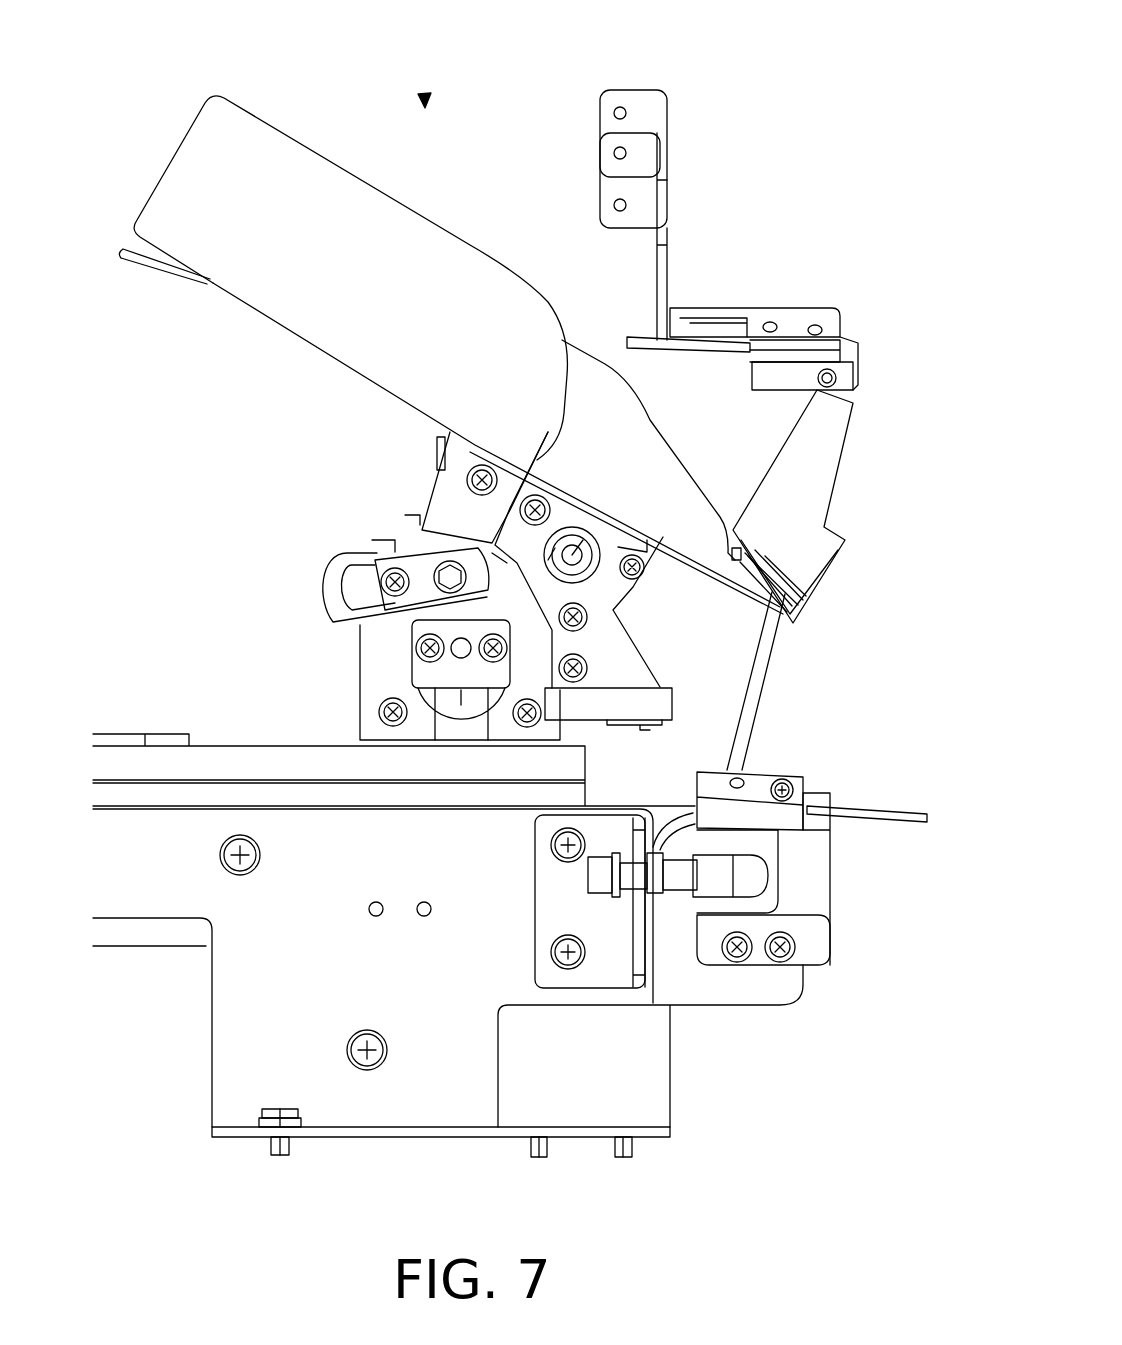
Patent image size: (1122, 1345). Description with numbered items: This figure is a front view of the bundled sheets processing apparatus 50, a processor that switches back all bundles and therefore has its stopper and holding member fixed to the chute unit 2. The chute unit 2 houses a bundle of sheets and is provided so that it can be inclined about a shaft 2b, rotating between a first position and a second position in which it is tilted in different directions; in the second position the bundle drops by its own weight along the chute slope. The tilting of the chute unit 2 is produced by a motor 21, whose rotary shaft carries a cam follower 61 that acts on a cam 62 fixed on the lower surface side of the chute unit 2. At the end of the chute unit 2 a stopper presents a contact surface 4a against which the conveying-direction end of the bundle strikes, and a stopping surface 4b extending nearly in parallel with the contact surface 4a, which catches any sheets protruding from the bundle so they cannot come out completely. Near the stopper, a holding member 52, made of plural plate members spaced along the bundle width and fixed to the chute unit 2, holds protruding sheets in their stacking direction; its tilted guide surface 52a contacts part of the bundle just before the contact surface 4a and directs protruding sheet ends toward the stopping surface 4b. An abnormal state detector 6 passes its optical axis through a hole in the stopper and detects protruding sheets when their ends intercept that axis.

The bundled sheets processing apparatus 50 is at (425, 104).
The chute unit 2 is at (298, 305).
The shaft 2b is at (607, 510).
The cam follower 61 is at (372, 556).
The cam 62 is at (333, 578).
The motor 21 is at (355, 657).
The holding member 52 is at (825, 447).
The abnormal state detector 6 is at (858, 350).
The contact surface 4a is at (728, 553).
The stopping surface 4b is at (753, 617).
The guide surface 52a is at (743, 590).